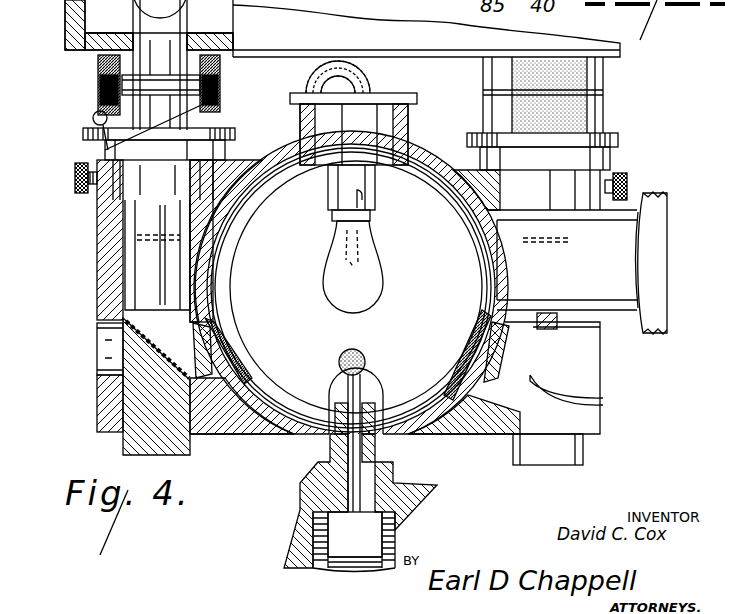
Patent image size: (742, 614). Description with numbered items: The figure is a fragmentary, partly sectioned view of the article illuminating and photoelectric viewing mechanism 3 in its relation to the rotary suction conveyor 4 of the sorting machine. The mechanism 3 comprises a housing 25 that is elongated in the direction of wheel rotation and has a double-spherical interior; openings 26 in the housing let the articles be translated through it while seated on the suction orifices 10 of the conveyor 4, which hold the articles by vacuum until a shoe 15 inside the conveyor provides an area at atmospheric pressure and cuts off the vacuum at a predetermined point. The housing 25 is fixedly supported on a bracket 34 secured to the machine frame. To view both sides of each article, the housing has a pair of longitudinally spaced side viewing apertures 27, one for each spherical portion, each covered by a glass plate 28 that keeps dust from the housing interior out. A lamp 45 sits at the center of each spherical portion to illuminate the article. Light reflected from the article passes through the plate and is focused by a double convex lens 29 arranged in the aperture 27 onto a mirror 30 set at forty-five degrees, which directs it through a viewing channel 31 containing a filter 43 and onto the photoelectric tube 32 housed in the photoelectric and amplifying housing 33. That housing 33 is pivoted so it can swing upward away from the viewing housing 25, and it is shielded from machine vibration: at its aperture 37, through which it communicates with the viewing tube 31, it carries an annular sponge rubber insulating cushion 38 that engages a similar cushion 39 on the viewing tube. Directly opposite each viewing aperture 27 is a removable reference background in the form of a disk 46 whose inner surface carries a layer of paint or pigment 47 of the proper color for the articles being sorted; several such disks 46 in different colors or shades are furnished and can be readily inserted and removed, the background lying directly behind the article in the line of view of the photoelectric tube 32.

The illuminating and viewing mechanism 3 is at (411, 420).
The rotary suction conveyor 4 is at (310, 497).
The suction orifices 10 is at (366, 375).
The shoe 15 is at (348, 548).
The housing 25 is at (253, 422).
The openings 26 is at (325, 415).
The side viewing apertures 27 is at (228, 356).
The glass plate 28 is at (222, 364).
The double convex lens 29 is at (221, 366).
The mirror 30 is at (140, 335).
The viewing channel 31 is at (137, 268).
The photoelectric tube 32 is at (352, 28).
The photoelectric and amplifying housing 33 is at (131, 25).
The bracket 34 is at (654, 197).
The aperture 37 is at (178, 44).
The annular rubber insulating cushion 38 is at (200, 68).
The cushion 39 is at (200, 103).
The filter 43 is at (548, 243).
The lamp 45 is at (369, 258).
The disk 46 is at (477, 393).
The layer of paint or pigment 47 is at (477, 392).